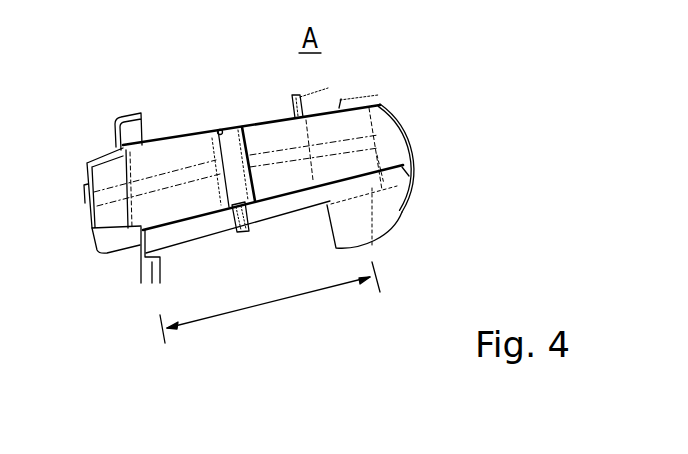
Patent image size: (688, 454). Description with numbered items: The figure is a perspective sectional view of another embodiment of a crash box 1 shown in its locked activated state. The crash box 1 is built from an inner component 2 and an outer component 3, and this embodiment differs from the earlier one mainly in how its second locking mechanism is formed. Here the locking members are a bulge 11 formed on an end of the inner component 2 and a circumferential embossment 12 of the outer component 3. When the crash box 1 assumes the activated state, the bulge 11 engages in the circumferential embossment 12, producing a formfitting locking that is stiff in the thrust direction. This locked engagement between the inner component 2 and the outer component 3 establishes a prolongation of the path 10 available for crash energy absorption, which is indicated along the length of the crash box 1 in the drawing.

The crash box 1 is at (152, 88).
The inner component 2 is at (302, 198).
The outer component 3 is at (195, 228).
The path for crash energy absorption 10 is at (270, 302).
The bulge 11 is at (243, 200).
The circumferential embossment 12 is at (243, 200).